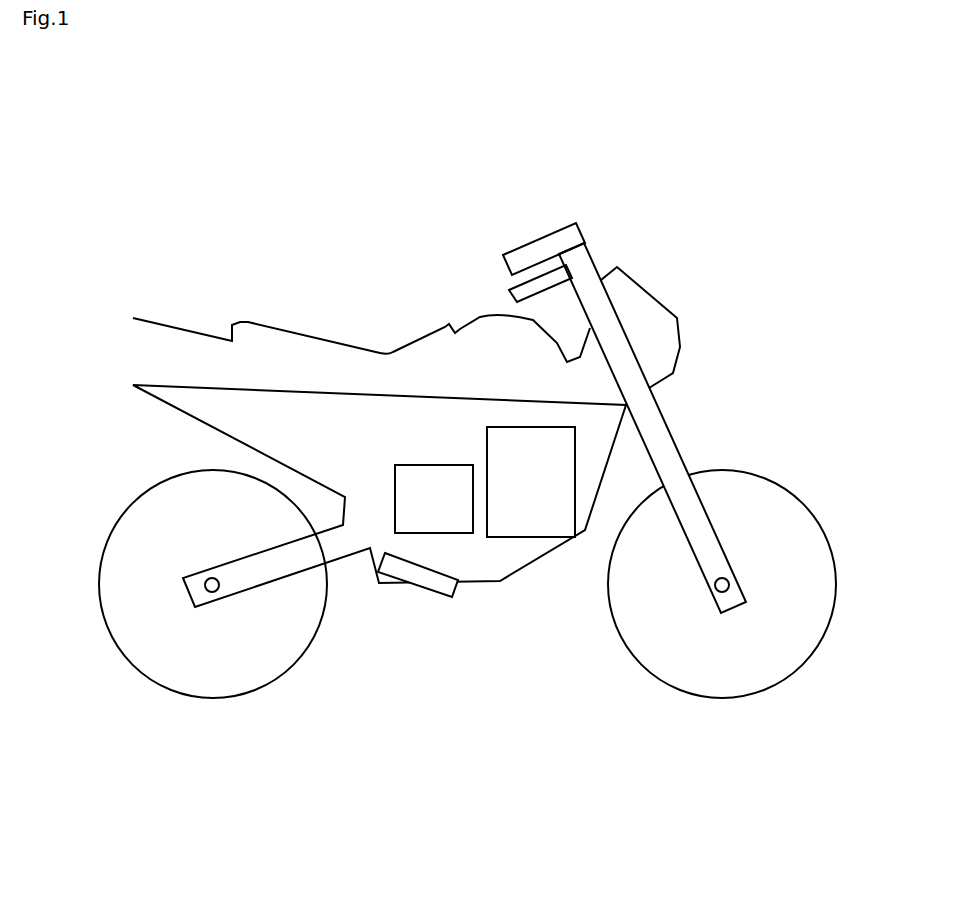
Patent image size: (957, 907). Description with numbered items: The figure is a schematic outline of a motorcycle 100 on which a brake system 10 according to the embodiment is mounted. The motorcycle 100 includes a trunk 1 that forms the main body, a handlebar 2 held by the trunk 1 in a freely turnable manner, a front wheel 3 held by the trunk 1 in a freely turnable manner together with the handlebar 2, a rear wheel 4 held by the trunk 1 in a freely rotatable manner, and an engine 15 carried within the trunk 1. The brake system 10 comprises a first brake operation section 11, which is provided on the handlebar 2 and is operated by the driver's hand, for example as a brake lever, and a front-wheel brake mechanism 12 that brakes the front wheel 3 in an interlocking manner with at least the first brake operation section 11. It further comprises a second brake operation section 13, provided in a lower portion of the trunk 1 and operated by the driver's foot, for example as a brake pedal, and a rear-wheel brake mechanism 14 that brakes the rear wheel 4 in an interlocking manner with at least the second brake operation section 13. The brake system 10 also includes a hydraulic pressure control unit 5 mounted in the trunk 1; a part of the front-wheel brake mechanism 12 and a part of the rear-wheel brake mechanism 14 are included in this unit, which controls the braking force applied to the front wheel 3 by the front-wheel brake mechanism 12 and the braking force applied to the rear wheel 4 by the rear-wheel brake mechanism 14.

The motorcycle 100 is at (778, 89).
The trunk 1 is at (307, 353).
The handlebar 2 is at (537, 250).
The front wheel 3 is at (723, 710).
The rear wheel 4 is at (212, 712).
The hydraulic pressure control unit 5 is at (418, 463).
The brake system 10 is at (710, 393).
The first brake operation section 11 is at (515, 293).
The front-wheel brake mechanism 12 is at (735, 555).
The second brake operation section 13 is at (433, 580).
The rear-wheel brake mechanism 14 is at (192, 563).
The engine 15 is at (541, 520).